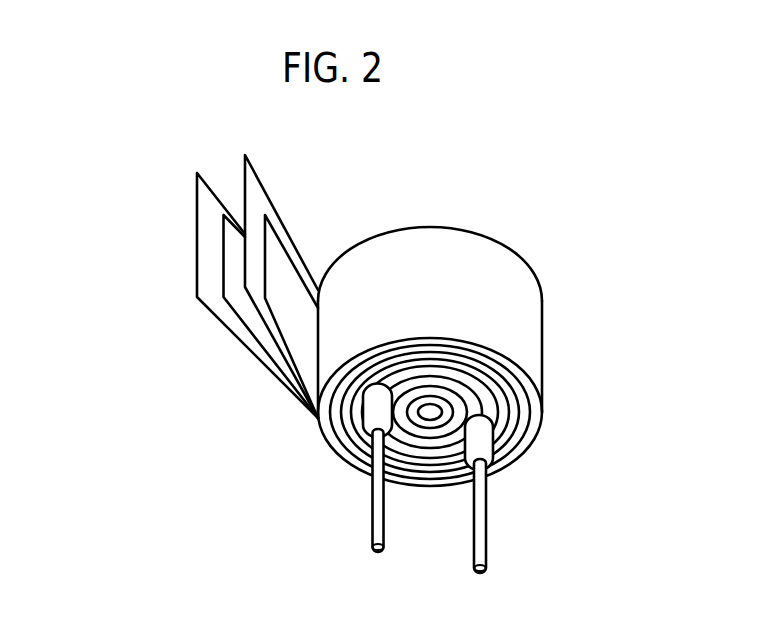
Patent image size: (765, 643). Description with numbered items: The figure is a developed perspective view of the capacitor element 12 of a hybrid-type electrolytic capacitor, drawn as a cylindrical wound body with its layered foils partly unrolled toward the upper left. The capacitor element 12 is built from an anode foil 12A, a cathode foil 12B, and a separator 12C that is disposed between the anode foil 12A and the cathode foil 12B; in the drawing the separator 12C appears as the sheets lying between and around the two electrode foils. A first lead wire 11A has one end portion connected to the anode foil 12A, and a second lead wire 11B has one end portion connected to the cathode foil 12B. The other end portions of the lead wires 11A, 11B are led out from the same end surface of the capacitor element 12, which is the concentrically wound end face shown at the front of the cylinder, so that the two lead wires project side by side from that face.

The capacitor element 12 is at (548, 340).
The anode foil 12A is at (287, 283).
The cathode foil 12B is at (237, 265).
The separator 12C is at (252, 190).
The first lead wire 11A is at (377, 509).
The second lead wire 11B is at (481, 517).